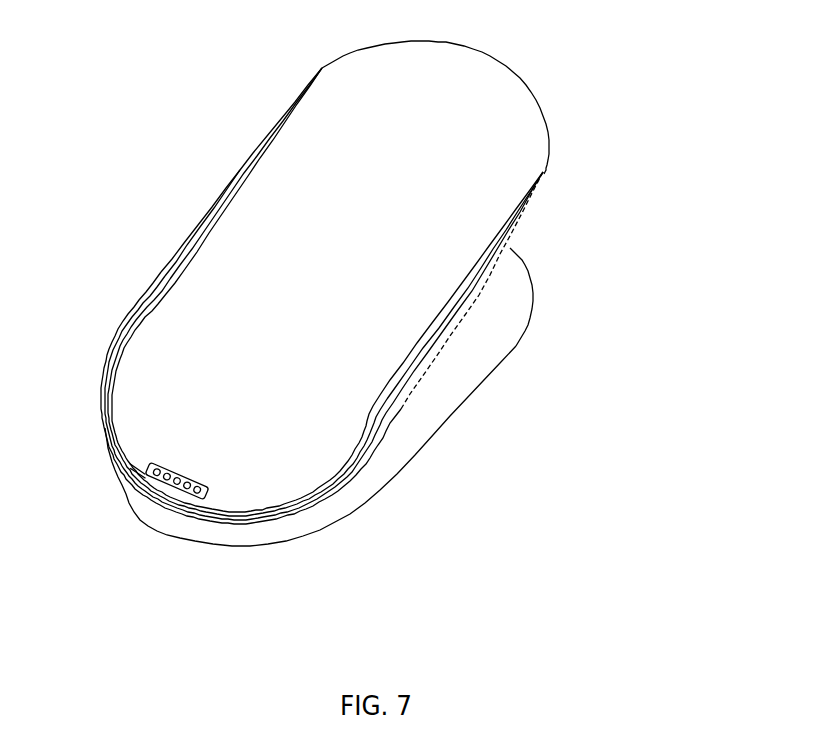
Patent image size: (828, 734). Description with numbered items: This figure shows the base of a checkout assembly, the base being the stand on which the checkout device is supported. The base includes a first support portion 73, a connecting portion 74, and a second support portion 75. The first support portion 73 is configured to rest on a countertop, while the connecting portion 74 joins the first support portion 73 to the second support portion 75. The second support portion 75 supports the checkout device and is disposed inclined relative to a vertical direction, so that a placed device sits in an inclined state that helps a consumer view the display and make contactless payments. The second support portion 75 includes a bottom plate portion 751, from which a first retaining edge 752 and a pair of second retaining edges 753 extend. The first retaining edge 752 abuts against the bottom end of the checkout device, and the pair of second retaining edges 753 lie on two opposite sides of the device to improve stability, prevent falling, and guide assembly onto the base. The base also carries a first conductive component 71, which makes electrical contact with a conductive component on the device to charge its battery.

The first conductive component 71 is at (203, 495).
The first support portion 73 is at (497, 328).
The connecting portion 74 is at (365, 475).
The second support portion 75 is at (547, 176).
The bottom plate portion 751 is at (250, 258).
The first retaining edge 752 is at (110, 440).
The second retaining edges 753 is at (273, 122).